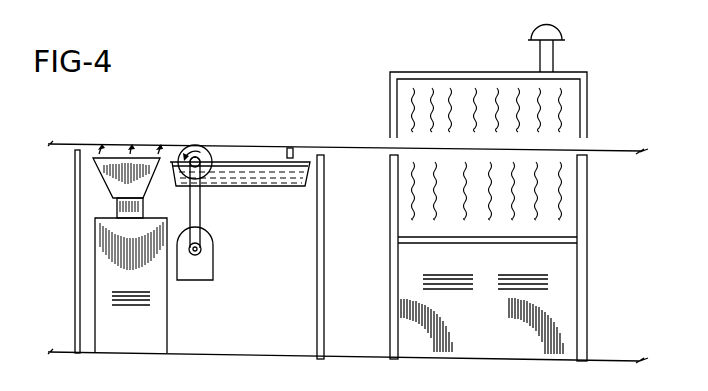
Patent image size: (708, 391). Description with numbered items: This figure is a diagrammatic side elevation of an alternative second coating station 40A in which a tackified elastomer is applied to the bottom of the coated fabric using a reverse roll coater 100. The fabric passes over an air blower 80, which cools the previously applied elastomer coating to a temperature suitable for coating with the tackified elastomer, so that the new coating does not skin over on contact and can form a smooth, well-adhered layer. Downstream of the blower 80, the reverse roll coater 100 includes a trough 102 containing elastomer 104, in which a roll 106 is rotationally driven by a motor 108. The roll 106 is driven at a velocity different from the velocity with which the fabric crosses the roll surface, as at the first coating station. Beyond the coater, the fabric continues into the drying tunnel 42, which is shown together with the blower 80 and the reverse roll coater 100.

The second coating station 40A is at (243, 138).
The drying tunnel 42 is at (480, 72).
The air blower 80 is at (157, 317).
The reverse roll coater 100 is at (270, 210).
The trough 102 is at (295, 190).
The elastomer 104 is at (224, 188).
The roll 106 is at (212, 150).
The motor 108 is at (293, 148).